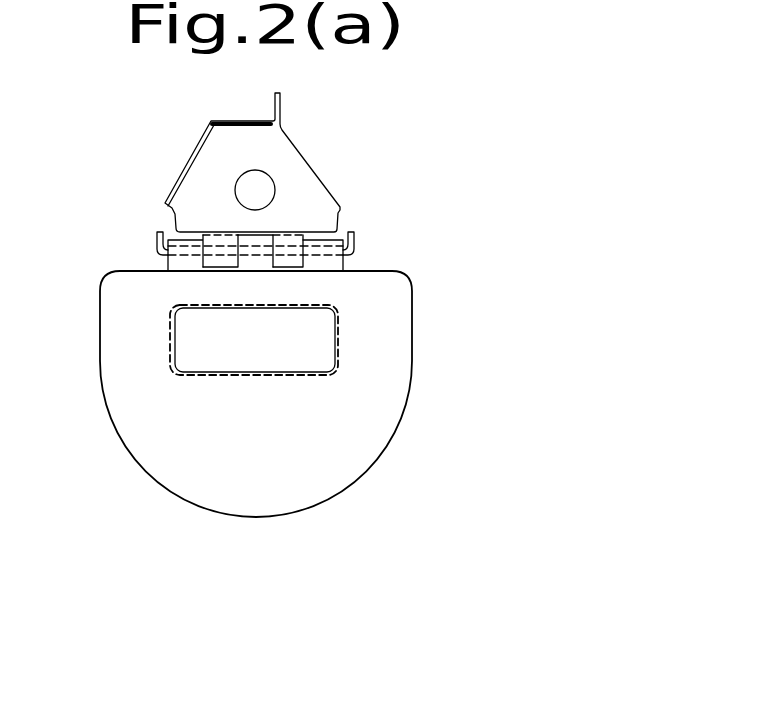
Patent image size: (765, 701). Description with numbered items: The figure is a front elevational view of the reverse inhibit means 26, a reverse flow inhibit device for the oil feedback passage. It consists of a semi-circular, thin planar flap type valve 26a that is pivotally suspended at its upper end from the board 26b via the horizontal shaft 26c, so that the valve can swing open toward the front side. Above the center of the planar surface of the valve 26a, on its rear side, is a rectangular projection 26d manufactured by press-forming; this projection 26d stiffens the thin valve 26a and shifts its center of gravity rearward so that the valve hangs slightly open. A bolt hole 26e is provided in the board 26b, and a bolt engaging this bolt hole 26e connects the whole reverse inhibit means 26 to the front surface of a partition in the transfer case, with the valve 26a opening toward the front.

The reverse inhibit means 26 is at (403, 196).
The flap type valve 26a is at (365, 442).
The board 26b is at (300, 171).
The horizontal shaft 26c is at (357, 237).
The rectangular projection 26d is at (287, 347).
The bolt hole 26e is at (241, 178).